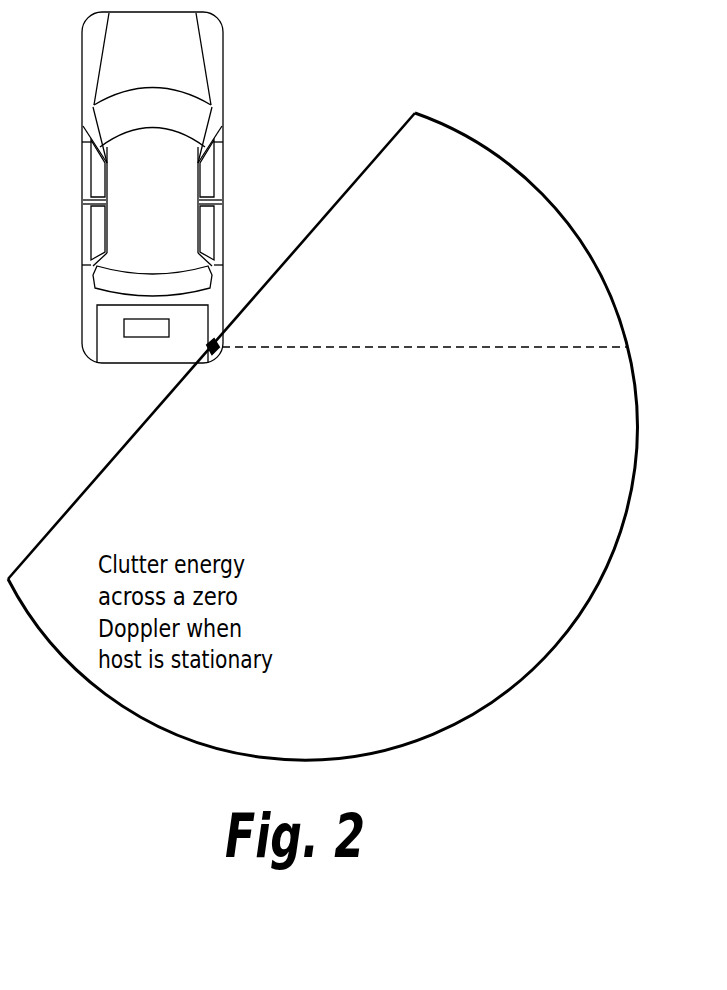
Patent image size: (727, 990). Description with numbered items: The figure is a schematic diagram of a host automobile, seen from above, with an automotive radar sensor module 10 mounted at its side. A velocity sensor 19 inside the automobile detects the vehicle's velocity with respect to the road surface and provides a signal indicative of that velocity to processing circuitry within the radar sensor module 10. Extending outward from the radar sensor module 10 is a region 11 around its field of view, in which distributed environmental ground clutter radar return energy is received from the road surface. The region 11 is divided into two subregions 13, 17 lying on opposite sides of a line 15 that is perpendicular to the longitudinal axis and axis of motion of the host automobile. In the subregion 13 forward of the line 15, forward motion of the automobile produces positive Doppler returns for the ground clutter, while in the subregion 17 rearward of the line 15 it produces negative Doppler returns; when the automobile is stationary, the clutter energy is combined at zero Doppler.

The automotive radar sensor module 10 is at (213, 352).
The region 11 is at (542, 192).
The subregion 13 is at (546, 330).
The line 15 is at (595, 347).
The subregion 17 is at (541, 545).
The velocity sensor 19 is at (142, 338).